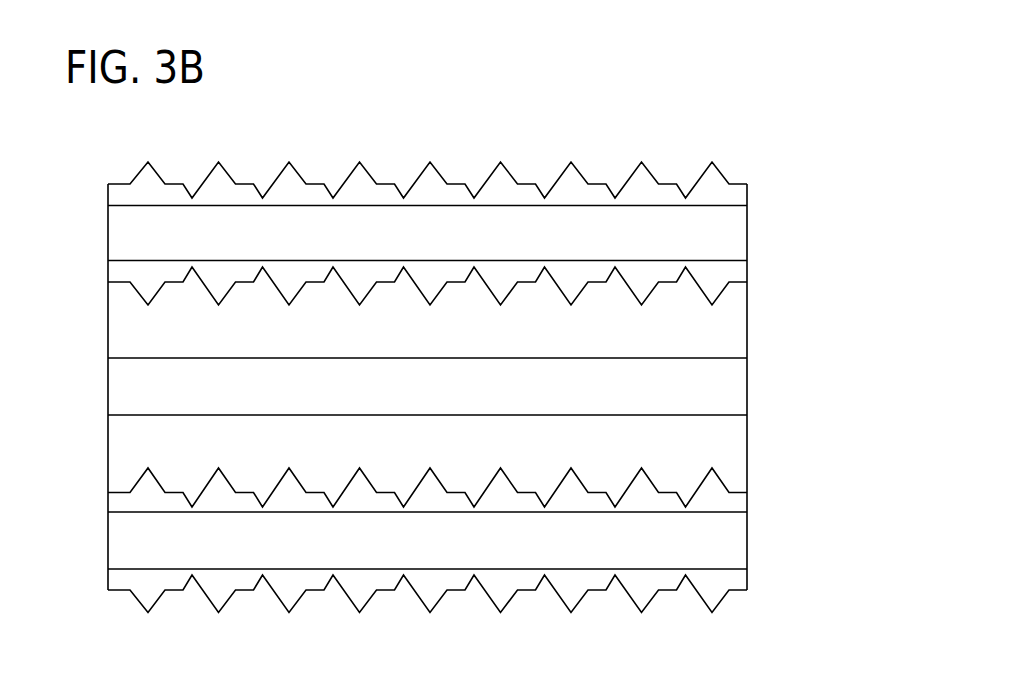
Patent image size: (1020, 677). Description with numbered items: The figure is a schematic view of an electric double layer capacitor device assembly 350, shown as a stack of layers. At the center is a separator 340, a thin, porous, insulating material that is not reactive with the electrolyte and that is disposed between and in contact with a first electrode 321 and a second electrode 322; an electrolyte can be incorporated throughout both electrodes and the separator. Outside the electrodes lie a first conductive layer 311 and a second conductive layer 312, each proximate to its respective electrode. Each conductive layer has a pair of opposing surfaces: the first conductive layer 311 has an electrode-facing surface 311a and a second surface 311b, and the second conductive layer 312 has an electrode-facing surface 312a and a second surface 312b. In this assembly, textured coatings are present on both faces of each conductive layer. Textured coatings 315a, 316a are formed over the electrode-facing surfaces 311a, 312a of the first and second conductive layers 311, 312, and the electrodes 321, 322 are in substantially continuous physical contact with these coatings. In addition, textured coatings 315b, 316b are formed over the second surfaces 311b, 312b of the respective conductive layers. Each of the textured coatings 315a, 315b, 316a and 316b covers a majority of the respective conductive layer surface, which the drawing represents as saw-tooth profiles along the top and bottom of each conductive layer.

The device assembly 350 is at (735, 118).
The second conductive layer 312 is at (443, 233).
The electrode-facing surface of second conductive layer 312a is at (120, 262).
The second surface of second conductive layer 312b is at (126, 207).
The textured coating 316a is at (357, 275).
The textured coating 316b is at (573, 190).
The second electrode 322 is at (713, 329).
The separator 340 is at (727, 392).
The first electrode 321 is at (727, 445).
The first conductive layer 311 is at (420, 547).
The electrode-facing surface of first conductive layer 311a is at (126, 496).
The second surface of first conductive layer 311b is at (121, 570).
The textured coating 315a is at (297, 499).
The textured coating 315b is at (597, 580).